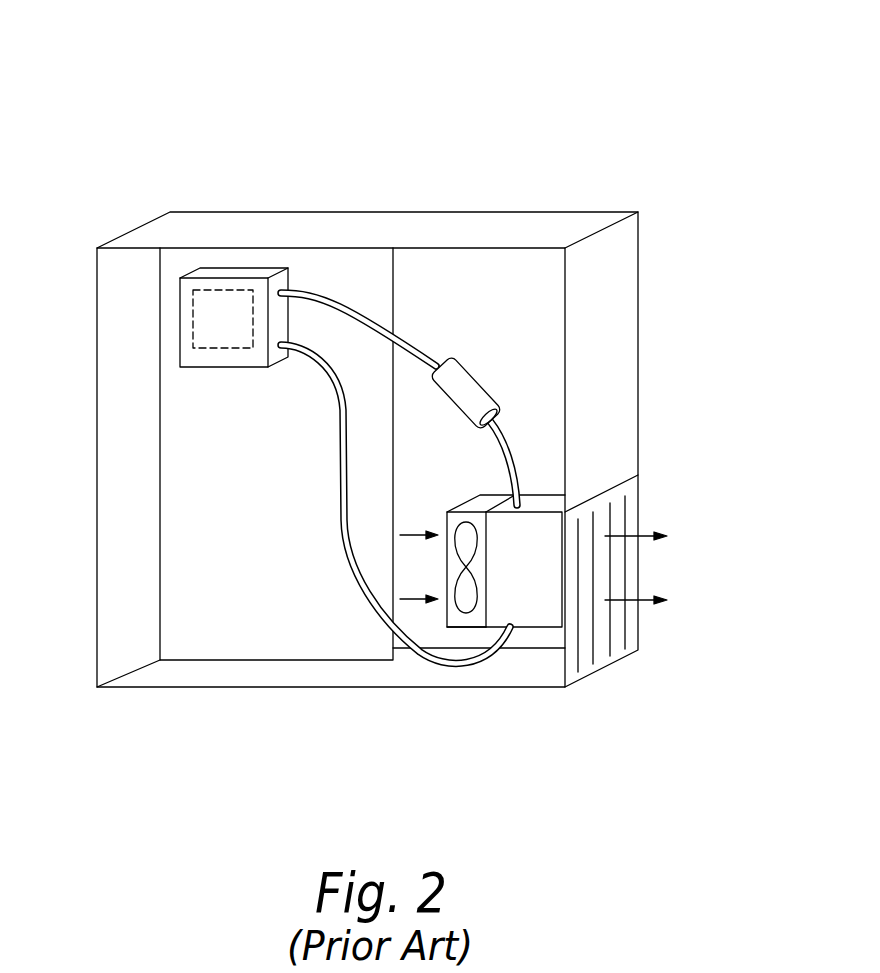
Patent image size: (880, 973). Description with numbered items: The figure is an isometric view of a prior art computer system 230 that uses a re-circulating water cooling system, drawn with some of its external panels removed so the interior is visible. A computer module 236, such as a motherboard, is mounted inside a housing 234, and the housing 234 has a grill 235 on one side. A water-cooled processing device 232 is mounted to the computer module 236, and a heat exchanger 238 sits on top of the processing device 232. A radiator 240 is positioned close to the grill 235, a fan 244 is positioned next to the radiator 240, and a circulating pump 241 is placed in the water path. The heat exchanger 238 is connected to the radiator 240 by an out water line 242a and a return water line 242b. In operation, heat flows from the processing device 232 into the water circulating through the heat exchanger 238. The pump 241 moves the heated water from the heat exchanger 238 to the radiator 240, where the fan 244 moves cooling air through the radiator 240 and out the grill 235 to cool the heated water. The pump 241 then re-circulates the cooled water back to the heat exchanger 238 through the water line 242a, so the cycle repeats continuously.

The computer system 230 is at (590, 88).
The processing device 232 is at (233, 300).
The housing 234 is at (588, 213).
The grill 235 is at (625, 567).
The computer module 236 is at (212, 647).
The heat exchanger 238 is at (205, 285).
The radiator 240 is at (537, 637).
The circulating pump 241 is at (462, 398).
The out water line 242a is at (510, 450).
The return water line 242b is at (343, 530).
The fan 244 is at (447, 618).